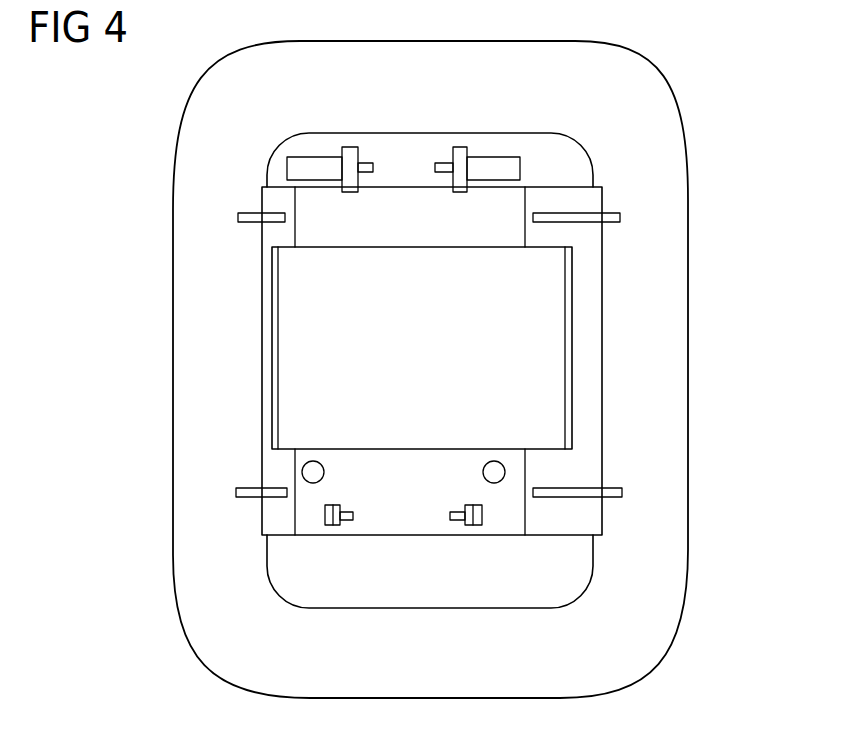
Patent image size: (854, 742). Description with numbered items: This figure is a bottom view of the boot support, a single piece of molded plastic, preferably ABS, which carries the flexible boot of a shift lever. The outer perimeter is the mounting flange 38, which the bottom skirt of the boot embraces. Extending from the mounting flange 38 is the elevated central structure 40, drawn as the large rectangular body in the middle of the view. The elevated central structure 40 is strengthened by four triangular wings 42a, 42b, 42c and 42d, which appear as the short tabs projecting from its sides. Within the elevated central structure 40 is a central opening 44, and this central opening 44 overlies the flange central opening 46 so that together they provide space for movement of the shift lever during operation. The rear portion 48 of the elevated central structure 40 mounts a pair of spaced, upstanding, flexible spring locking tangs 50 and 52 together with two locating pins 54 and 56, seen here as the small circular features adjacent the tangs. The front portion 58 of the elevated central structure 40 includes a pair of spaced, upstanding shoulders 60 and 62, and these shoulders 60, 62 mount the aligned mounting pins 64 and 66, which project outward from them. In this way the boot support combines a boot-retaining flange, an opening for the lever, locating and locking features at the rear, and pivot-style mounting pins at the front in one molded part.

The mounting flange 38 is at (613, 73).
The elevated central structure 40 is at (585, 363).
The triangular wing 42a is at (615, 215).
The triangular wing 42b is at (600, 492).
The triangular wing 42c is at (242, 493).
The triangular wing 42d is at (250, 218).
The central opening 44 is at (400, 248).
The flange central opening 46 is at (557, 600).
The rear portion 48 is at (405, 463).
The spring locking tang 50 is at (473, 523).
The spring locking tang 52 is at (333, 523).
The locating pin 54 is at (497, 470).
The locating pin 56 is at (320, 470).
The front portion 58 is at (395, 158).
The shoulder 60 is at (462, 158).
The shoulder 62 is at (348, 148).
The mounting pin 64 is at (513, 170).
The mounting pin 66 is at (293, 165).